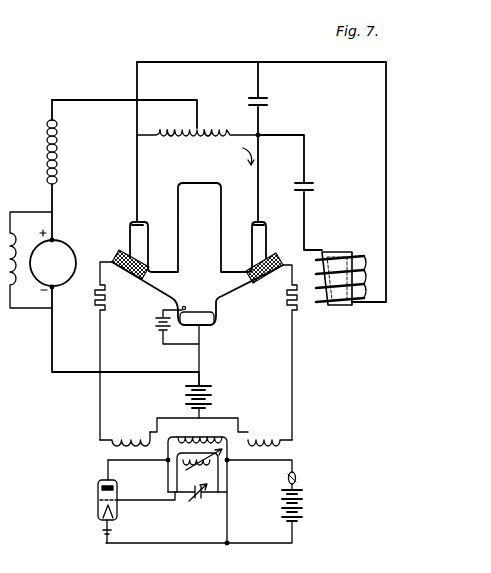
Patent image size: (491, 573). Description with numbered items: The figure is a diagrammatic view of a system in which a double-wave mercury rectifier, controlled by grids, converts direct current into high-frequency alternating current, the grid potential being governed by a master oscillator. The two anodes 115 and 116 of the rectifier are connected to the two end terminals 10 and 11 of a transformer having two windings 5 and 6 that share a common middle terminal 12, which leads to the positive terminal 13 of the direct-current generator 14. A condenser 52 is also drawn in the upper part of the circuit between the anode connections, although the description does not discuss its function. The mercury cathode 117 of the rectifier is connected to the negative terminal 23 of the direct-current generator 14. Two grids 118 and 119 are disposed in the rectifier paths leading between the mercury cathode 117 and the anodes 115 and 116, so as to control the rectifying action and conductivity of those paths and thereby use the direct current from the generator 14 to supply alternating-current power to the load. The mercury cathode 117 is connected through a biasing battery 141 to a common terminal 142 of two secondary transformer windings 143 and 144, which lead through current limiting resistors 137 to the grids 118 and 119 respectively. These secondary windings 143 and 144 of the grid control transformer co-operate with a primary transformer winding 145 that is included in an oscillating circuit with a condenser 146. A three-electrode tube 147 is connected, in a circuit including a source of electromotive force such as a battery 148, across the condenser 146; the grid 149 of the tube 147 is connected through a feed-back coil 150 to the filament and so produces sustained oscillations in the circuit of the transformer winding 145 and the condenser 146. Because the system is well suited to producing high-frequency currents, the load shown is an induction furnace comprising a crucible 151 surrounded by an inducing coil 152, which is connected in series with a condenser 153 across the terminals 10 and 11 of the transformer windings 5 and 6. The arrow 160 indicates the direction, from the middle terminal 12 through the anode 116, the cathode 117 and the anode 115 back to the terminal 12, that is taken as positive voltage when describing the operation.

The transformer winding 5 is at (173, 138).
The transformer winding 6 is at (212, 138).
The end terminal 10 is at (137, 135).
The end terminal 11 is at (260, 134).
The common middle terminal 12 is at (200, 127).
The positive terminal 13 is at (53, 212).
The direct-current generator 14 is at (58, 250).
The negative terminal 23 is at (52, 310).
The condenser 52 is at (264, 101).
The anode 115 is at (136, 221).
The anode 116 is at (260, 222).
The mercury cathode 117 is at (214, 322).
The grid 118 is at (120, 258).
The grid 119 is at (268, 255).
The current limiting resistor 137 is at (105, 299).
The biasing battery 141 is at (206, 405).
The common terminal 142 is at (193, 411).
The secondary transformer winding 143 is at (125, 432).
The secondary transformer winding 144 is at (270, 432).
The primary transformer winding 145 is at (204, 438).
The condenser 146 is at (203, 498).
The three-electrode tube 147 is at (97, 488).
The battery 148 is at (300, 508).
The grid 149 is at (140, 497).
The feed-back coil 150 is at (199, 470).
The crucible 151 is at (337, 252).
The inducing coil 152 is at (365, 271).
The condenser 153 is at (306, 183).
The arrow 160 is at (238, 163).